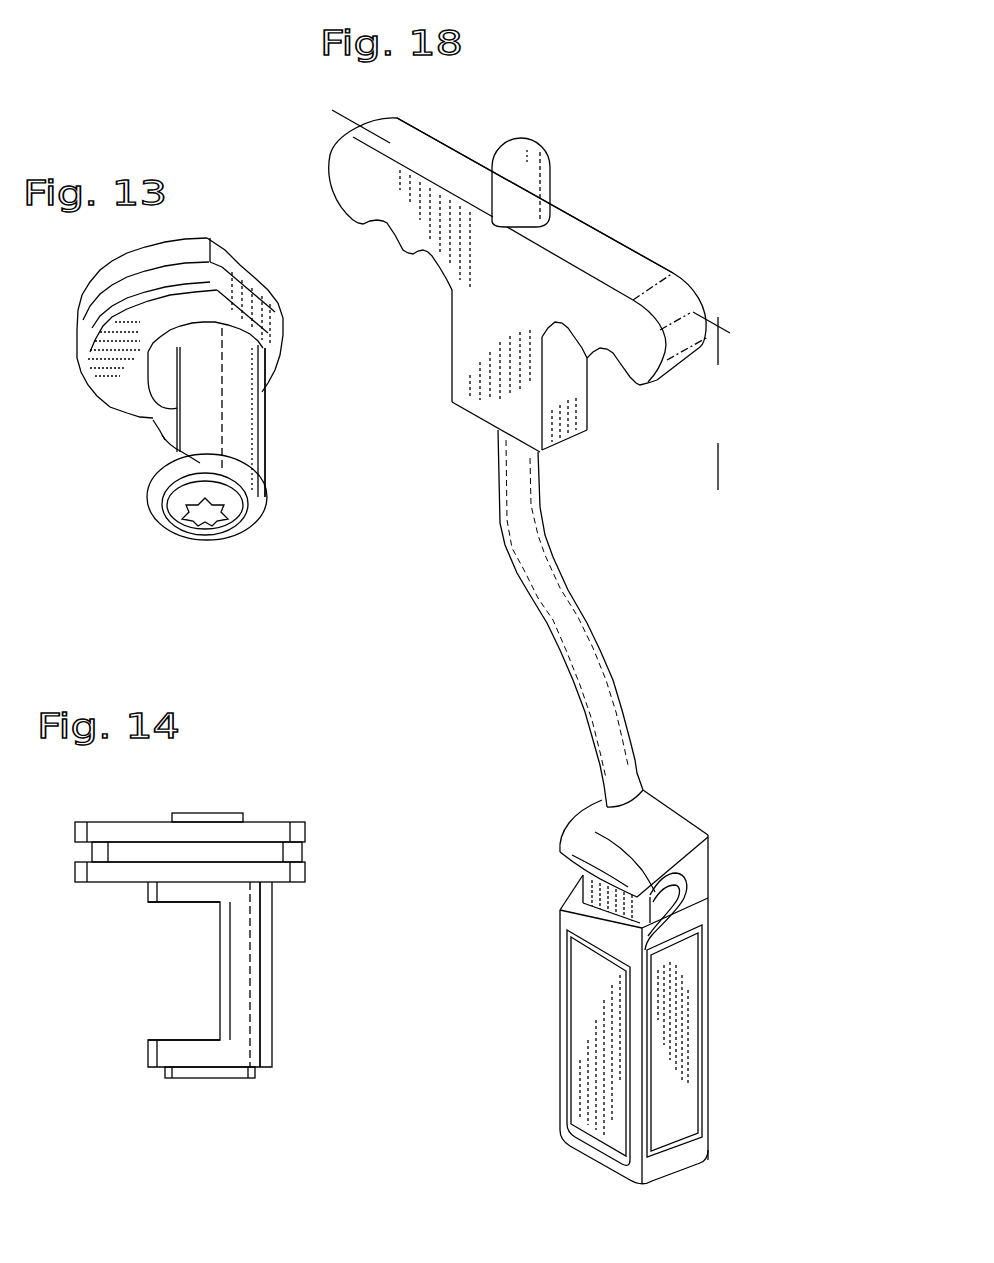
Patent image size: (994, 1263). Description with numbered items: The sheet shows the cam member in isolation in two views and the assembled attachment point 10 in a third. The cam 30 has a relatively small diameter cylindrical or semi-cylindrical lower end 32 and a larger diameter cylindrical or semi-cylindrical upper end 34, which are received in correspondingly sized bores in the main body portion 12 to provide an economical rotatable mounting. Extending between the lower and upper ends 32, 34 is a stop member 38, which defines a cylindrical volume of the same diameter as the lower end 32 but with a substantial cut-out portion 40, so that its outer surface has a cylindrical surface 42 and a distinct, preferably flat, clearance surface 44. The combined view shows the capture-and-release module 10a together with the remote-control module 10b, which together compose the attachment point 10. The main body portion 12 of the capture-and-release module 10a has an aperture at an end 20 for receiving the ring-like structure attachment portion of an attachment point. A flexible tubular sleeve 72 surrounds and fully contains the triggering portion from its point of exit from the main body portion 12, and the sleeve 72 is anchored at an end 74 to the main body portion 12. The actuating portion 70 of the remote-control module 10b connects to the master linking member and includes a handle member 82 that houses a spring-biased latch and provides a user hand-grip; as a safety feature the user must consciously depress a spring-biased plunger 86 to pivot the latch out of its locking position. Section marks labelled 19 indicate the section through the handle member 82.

In FIG. 18, the attachment point 10 is at (622, 80).
In FIG. 18, the capture-and-release module 10a is at (742, 840).
In FIG. 18, the remote-control module 10b is at (732, 277).
In FIG. 18, the main body portion 12 is at (736, 1055).
In FIG. 18, the section line 19 is at (333, 123).
In FIG. 18, the end of main body portion 20 is at (523, 1016).
In FIG. 13, the cam 30 is at (162, 549).
In FIG. 14, the cam 30 is at (282, 1079).
In FIG. 13, the lower end 32 is at (160, 470).
In FIG. 14, the lower end 32 is at (178, 1017).
In FIG. 13, the upper end 34 is at (110, 377).
In FIG. 14, the upper end 34 is at (148, 794).
In FIG. 13, the stop member 38 is at (272, 423).
In FIG. 14, the stop member 38 is at (274, 1005).
In FIG. 13, the cut-out portion 40 is at (162, 411).
In FIG. 14, the cut-out portion 40 is at (194, 929).
In FIG. 13, the cylindrical surface 42 is at (270, 397).
In FIG. 14, the cylindrical surface 42 is at (256, 978).
In FIG. 13, the clearance surface 44 is at (168, 454).
In FIG. 14, the clearance surface 44 is at (230, 940).
In FIG. 18, the actuating portion 70 is at (456, 461).
In FIG. 18, the flexible tubular sleeve 72 is at (600, 680).
In FIG. 18, the end of sleeve 74 is at (589, 784).
In FIG. 18, the handle member 82 is at (620, 247).
In FIG. 18, the spring-biased plunger 86 is at (540, 178).